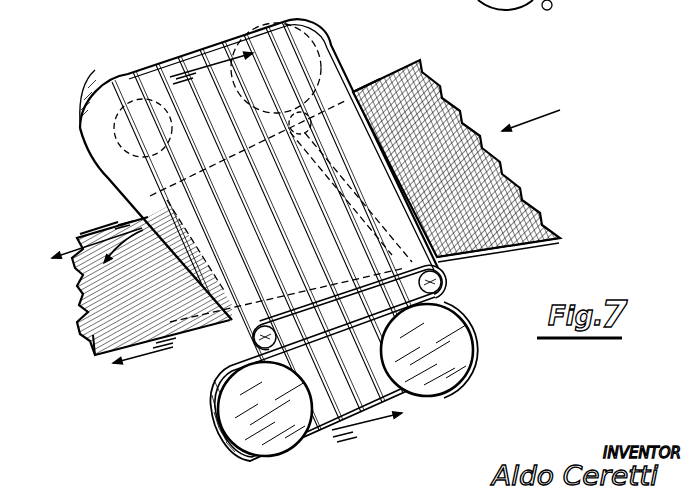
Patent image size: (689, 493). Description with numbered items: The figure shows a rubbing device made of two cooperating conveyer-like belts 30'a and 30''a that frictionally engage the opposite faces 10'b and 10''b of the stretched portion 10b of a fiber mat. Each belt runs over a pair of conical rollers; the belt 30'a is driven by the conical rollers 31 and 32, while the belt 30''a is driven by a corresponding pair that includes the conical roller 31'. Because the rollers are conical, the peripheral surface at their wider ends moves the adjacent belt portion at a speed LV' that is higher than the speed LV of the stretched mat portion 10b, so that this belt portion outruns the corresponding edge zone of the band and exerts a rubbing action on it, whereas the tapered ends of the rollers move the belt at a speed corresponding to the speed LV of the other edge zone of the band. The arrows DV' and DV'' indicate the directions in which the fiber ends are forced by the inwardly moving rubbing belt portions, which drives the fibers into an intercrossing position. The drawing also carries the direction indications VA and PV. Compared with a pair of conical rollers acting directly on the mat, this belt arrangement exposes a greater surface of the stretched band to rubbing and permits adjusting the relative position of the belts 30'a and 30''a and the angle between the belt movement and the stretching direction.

The conveyer-like belt 30'a is at (263, 225).
The conveyer-like belt 30''a is at (343, 389).
The conical roller 31 is at (295, 58).
The conical roller 31' is at (449, 350).
The conical roller 32 is at (85, 100).
The stretched portion of the mat 10b is at (484, 181).
The face of the stretched mat portion 10'b is at (383, 56).
The face of the stretched mat portion 10''b is at (498, 265).
The speed of the stretched mat portion LV is at (114, 292).
The speed of the belt at the wider roller ends LV' is at (300, 225).
The feed direction VA is at (531, 109).
The rotation direction PV is at (492, 8).
The direction arrow DV' is at (134, 280).
The direction arrow DV'' is at (74, 365).